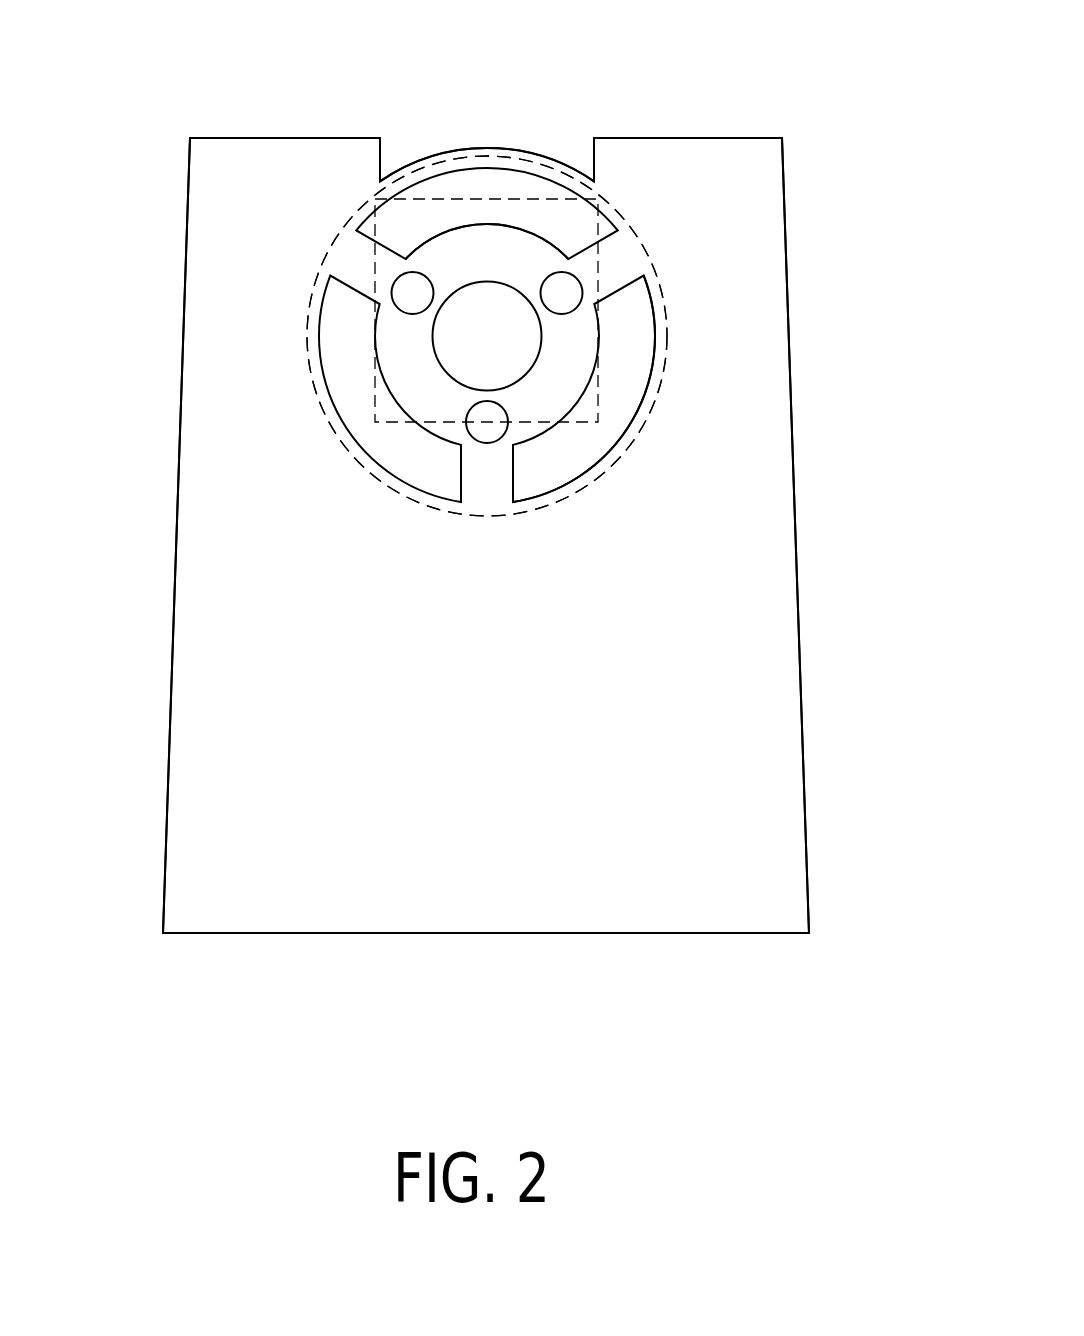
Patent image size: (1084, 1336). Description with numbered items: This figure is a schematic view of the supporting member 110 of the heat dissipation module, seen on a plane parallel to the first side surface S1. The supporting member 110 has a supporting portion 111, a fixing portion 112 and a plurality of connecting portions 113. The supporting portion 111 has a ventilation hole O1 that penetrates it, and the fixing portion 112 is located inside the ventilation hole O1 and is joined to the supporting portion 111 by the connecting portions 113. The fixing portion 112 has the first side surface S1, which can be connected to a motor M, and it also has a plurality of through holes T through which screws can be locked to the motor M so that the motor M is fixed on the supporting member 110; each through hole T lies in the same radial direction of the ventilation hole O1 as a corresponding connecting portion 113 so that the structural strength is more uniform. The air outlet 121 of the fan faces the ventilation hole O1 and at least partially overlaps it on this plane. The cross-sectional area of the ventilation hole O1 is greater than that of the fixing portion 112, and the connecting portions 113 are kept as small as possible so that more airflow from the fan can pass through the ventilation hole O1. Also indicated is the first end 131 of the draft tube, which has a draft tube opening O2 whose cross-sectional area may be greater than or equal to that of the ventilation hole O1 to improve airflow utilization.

The supporting member 110 is at (185, 300).
The supporting portion 111 is at (213, 750).
The fixing portion 112 is at (487, 221).
The connecting portions 113 is at (617, 262).
The air outlet 121 is at (429, 198).
The first side surface S1 is at (497, 243).
The through holes T is at (550, 269).
The ventilation hole O1 is at (604, 458).
The draft tube opening O2 is at (657, 283).
The first end 131 is at (632, 336).
The motor M is at (600, 408).